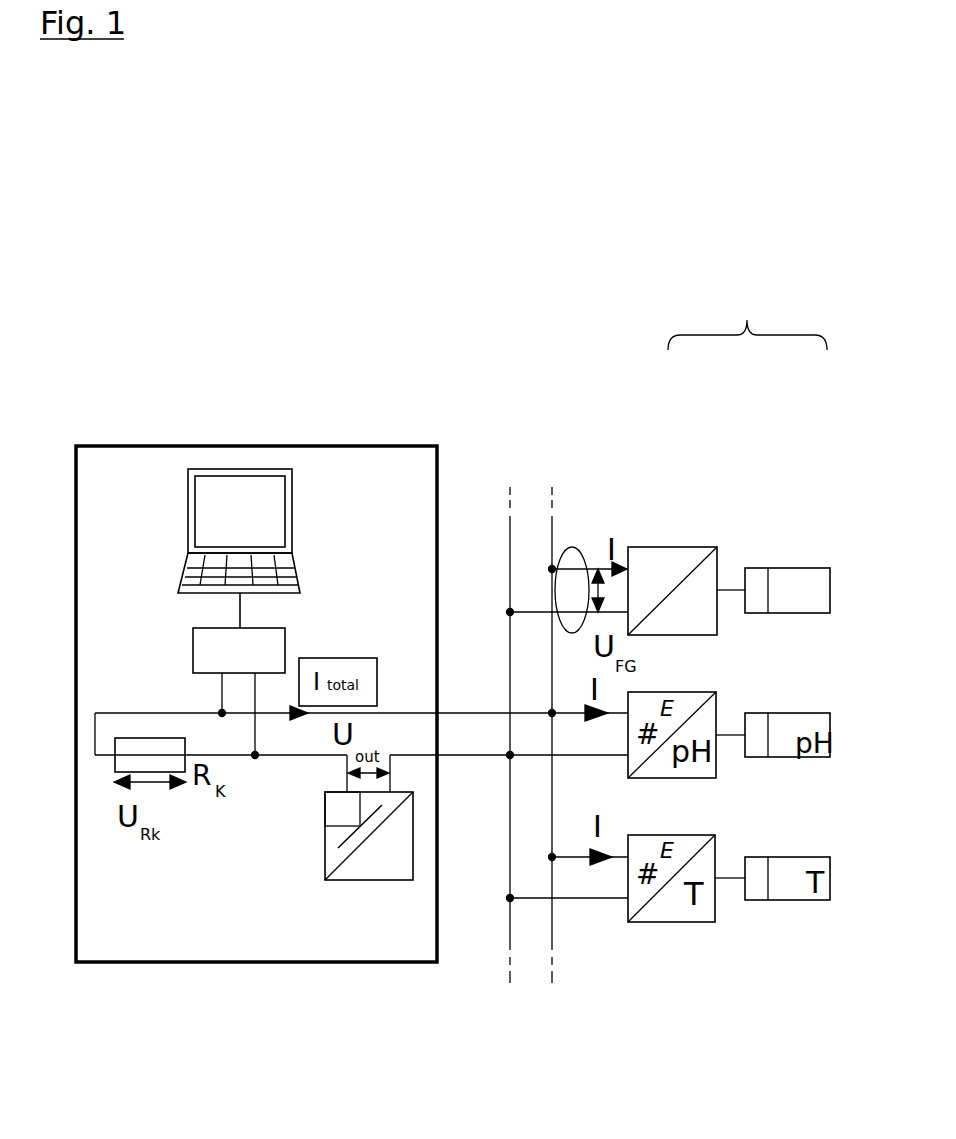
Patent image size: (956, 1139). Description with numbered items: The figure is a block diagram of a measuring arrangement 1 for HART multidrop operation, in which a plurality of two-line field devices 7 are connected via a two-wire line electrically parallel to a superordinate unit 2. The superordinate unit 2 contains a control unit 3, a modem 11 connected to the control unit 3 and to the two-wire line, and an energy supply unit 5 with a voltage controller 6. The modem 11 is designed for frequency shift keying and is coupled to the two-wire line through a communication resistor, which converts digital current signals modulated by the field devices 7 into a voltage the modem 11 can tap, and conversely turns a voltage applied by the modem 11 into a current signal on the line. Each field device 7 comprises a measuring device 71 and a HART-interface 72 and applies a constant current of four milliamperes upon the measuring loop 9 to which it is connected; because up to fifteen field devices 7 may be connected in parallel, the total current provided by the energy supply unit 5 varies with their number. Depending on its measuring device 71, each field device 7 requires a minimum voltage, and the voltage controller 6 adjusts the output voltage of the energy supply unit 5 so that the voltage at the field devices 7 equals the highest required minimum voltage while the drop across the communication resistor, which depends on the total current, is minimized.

The measuring arrangement 1 is at (309, 186).
The superordinate unit 2 is at (152, 457).
The control unit 3 is at (273, 495).
The energy supply unit 5 is at (313, 947).
The voltage controller 6 is at (337, 815).
The field devices 7 is at (747, 306).
The measuring loop 9 is at (575, 547).
The modem 11 is at (272, 645).
The measuring device 71 is at (790, 585).
The HART-interface 72 is at (687, 560).